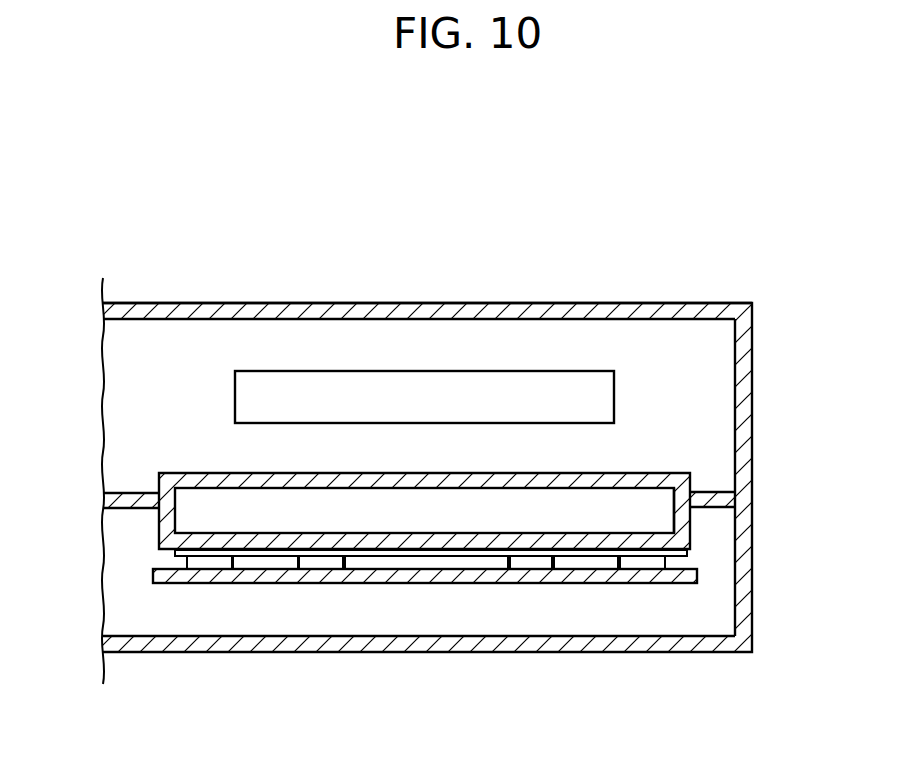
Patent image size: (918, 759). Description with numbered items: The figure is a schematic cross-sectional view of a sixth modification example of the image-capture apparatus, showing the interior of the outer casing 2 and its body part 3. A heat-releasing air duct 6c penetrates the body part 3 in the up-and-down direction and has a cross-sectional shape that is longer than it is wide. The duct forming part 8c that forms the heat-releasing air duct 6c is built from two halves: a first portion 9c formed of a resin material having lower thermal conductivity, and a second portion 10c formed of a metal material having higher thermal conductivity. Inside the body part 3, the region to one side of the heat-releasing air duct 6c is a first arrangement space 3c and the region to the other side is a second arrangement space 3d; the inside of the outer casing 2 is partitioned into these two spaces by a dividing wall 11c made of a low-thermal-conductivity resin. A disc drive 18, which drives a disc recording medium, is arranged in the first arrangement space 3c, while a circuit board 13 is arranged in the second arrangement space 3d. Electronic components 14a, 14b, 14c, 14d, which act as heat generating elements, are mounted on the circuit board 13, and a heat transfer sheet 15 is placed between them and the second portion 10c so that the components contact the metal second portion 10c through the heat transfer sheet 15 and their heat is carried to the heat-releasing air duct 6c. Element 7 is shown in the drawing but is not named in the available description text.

The outer casing 2 is at (657, 221).
The body part 3 is at (744, 408).
The first arrangement space 3c is at (438, 357).
The second arrangement space 3d is at (438, 625).
The top plate of casing 7 is at (490, 304).
The disc drive 18 is at (360, 378).
The first portion 9c is at (632, 473).
The heat-releasing air duct 6c is at (438, 518).
The duct forming part 8c is at (689, 528).
The dividing wall 11c is at (710, 493).
The second portion 10c is at (684, 546).
The heat transfer sheet 15 is at (177, 552).
The electronic component 14a is at (645, 569).
The electronic component 14b is at (530, 569).
The electronic component 14c is at (317, 569).
The electronic component 14d is at (207, 569).
The circuit board 13 is at (381, 583).